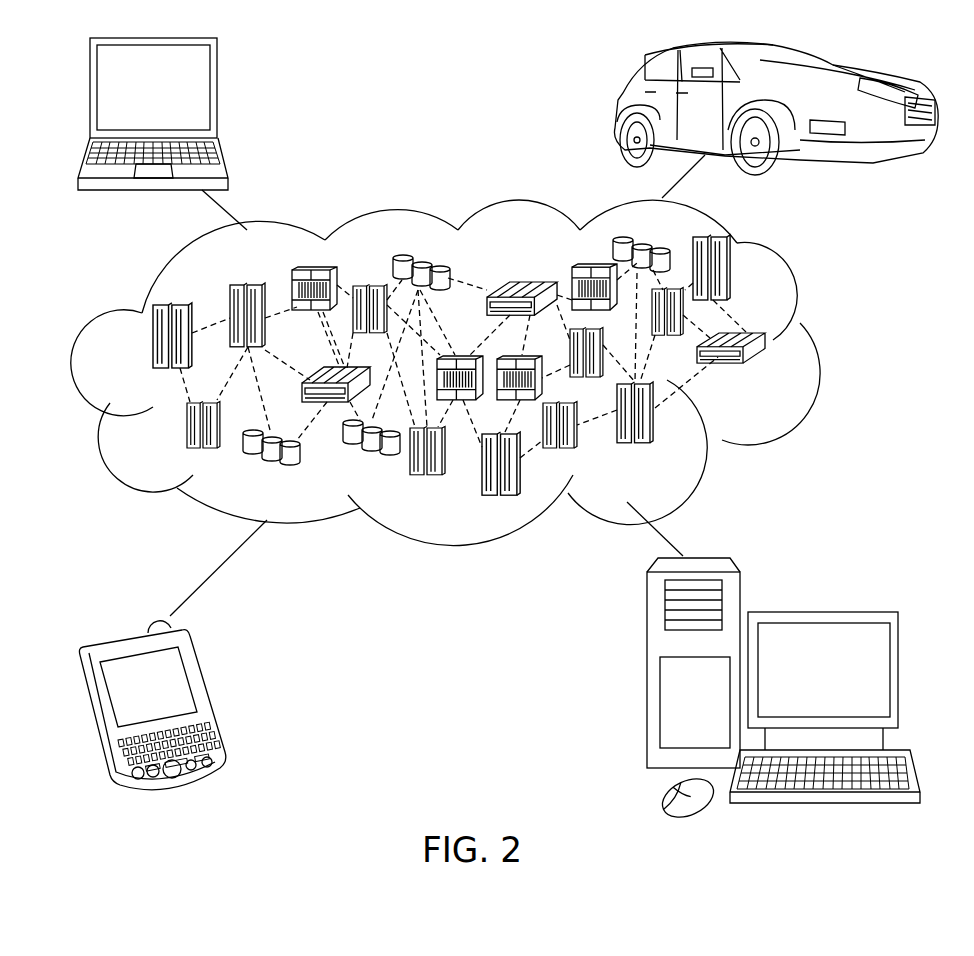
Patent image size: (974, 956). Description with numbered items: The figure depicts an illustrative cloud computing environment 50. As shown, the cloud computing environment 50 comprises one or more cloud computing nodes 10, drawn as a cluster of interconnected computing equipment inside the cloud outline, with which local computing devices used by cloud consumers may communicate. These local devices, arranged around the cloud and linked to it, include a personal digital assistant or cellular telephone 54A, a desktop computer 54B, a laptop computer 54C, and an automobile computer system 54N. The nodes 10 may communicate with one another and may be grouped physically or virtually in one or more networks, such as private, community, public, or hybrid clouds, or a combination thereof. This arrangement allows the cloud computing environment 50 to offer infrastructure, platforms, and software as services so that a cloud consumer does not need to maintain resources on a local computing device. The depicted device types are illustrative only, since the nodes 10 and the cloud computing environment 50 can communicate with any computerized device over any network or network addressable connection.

The cloud computing nodes 10 is at (776, 376).
The cloud computing environment 50 is at (822, 347).
The personal digital assistant or cellular telephone 54A is at (208, 697).
The desktop computer 54B is at (822, 612).
The laptop computer 54C is at (218, 93).
The automobile computer system 54N is at (622, 108).